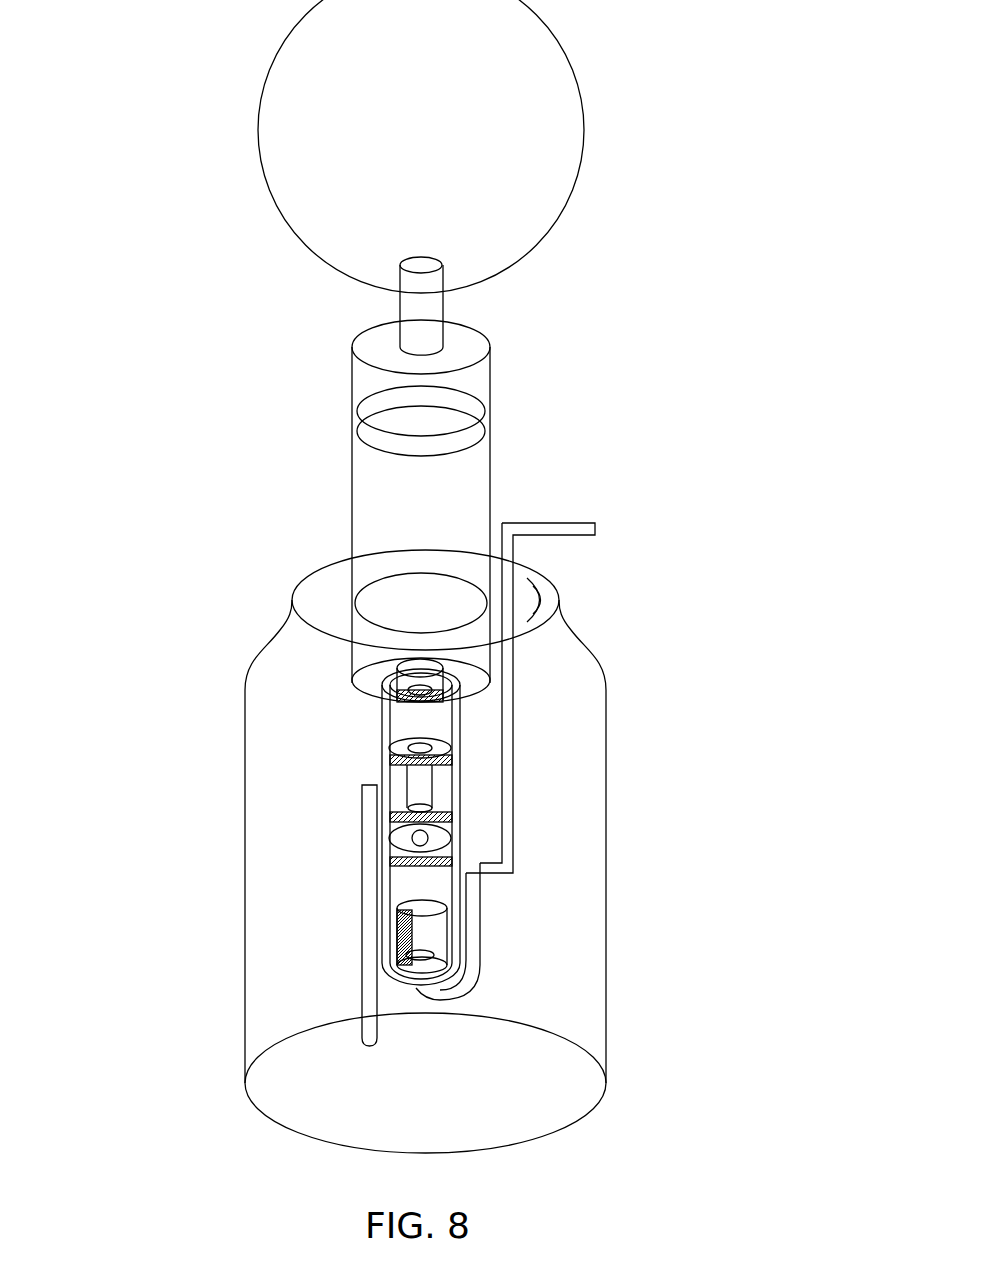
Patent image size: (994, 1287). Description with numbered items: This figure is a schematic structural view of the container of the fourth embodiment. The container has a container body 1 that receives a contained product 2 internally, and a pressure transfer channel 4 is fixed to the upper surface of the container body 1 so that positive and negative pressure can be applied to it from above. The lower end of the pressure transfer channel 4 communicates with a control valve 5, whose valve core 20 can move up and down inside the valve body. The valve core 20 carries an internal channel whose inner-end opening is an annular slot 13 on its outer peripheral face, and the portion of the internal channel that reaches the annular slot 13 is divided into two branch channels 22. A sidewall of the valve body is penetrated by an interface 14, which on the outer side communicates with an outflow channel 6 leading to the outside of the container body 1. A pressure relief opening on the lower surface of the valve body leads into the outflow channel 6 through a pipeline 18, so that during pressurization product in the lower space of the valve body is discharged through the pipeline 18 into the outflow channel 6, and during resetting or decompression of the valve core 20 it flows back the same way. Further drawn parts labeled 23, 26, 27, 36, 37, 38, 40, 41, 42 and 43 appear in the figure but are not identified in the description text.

The container body 1 is at (263, 647).
The contained product 2 is at (280, 733).
The pressure transfer channel 4 is at (372, 515).
The control valve 5 is at (383, 781).
The outflow channel 6 is at (460, 740).
The annular slot 13 is at (385, 745).
The interface 14 is at (395, 980).
The pipeline 18 is at (458, 747).
The valve core 20 is at (480, 897).
The branch channels 22 is at (535, 198).
The liquid level 23 is at (445, 427).
The air tube 26 is at (383, 795).
The valve core 27 is at (458, 863).
The sleeve 36 is at (455, 962).
The bracket 37 is at (523, 583).
The ball valve 38 is at (458, 835).
The sealing block 40 is at (400, 943).
The sealing ring 41 is at (458, 812).
The limiting ring 42 is at (390, 700).
The hook end 43 is at (473, 992).